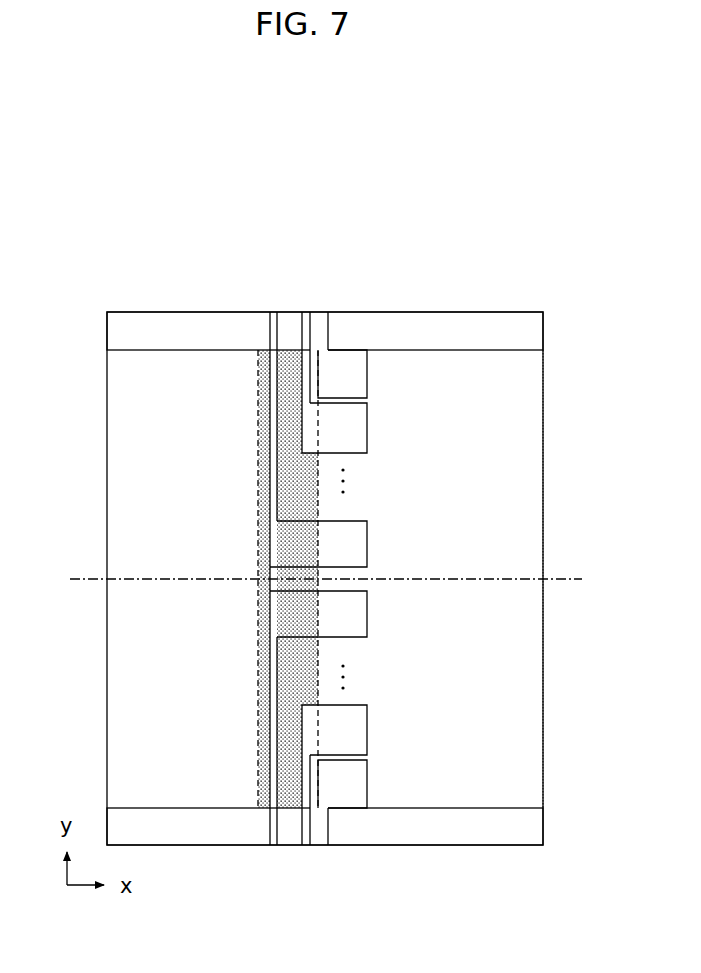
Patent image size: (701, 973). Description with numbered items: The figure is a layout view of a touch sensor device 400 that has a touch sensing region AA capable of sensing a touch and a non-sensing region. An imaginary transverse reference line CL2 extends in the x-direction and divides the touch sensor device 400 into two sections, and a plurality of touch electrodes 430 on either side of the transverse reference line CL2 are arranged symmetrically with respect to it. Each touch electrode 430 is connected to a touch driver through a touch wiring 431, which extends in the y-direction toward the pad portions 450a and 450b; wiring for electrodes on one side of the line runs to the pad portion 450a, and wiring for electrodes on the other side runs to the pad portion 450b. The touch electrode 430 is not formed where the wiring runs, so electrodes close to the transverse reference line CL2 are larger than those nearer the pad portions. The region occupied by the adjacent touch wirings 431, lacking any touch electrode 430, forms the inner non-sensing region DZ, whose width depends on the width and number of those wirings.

The touch sensor device 400 is at (303, 176).
The touch electrode 430 is at (352, 540).
The touch wiring 431 is at (270, 470).
The pad portion 450a is at (518, 334).
The pad portion 450b is at (518, 826).
The inner non-sensing region DZ is at (258, 400).
The touch sensing region AA is at (528, 668).
The transverse reference line CL2 is at (344, 580).